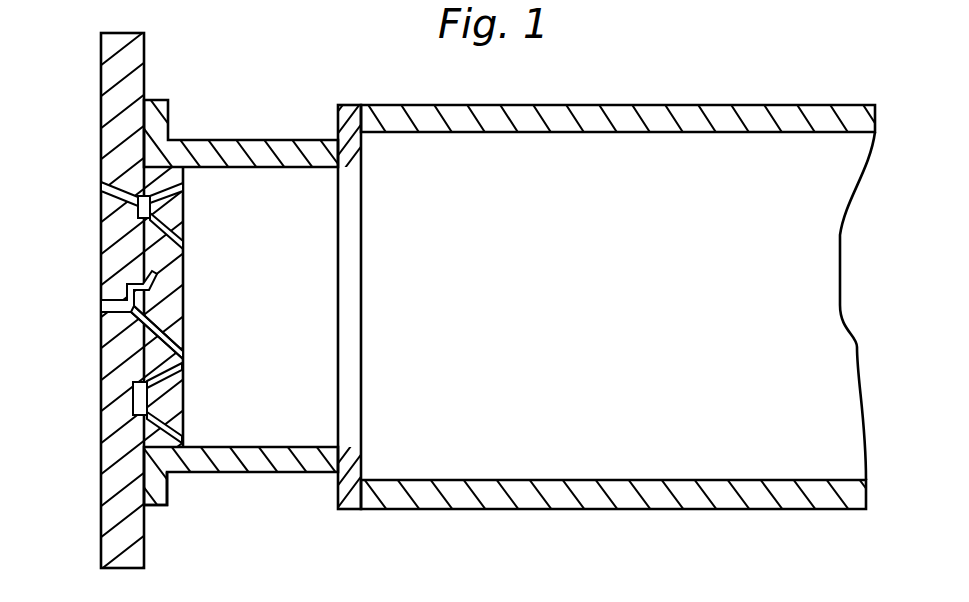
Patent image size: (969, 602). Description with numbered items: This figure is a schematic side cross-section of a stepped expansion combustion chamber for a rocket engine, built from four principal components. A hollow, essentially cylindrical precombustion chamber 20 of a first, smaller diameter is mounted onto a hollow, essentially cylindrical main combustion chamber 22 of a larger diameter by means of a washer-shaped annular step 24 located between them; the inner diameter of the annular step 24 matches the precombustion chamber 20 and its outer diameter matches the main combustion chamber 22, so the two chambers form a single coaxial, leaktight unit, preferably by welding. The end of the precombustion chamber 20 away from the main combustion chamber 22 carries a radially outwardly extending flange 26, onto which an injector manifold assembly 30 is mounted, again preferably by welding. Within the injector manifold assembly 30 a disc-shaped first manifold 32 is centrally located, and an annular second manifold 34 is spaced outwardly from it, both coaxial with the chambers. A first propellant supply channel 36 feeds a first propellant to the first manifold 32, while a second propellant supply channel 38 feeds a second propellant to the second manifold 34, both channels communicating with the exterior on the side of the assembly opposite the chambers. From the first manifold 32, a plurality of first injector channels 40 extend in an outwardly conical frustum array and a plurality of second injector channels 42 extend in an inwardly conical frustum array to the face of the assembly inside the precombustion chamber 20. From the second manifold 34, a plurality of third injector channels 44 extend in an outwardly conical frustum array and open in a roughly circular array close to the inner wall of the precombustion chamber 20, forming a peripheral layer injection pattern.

The precombustion chamber 20 is at (250, 470).
The main combustion chamber 22 is at (585, 500).
The annular step 24 is at (343, 495).
The flange 26 is at (158, 490).
The injector manifold assembly 30 is at (107, 488).
The first manifold 32 is at (131, 311).
The second manifold 34 is at (138, 216).
The first propellant supply channel 36 is at (120, 303).
The second propellant supply channel 38 is at (103, 188).
The first injector channels 40 is at (183, 268).
The second injector channels 42 is at (182, 232).
The third injector channels 44 is at (183, 191).